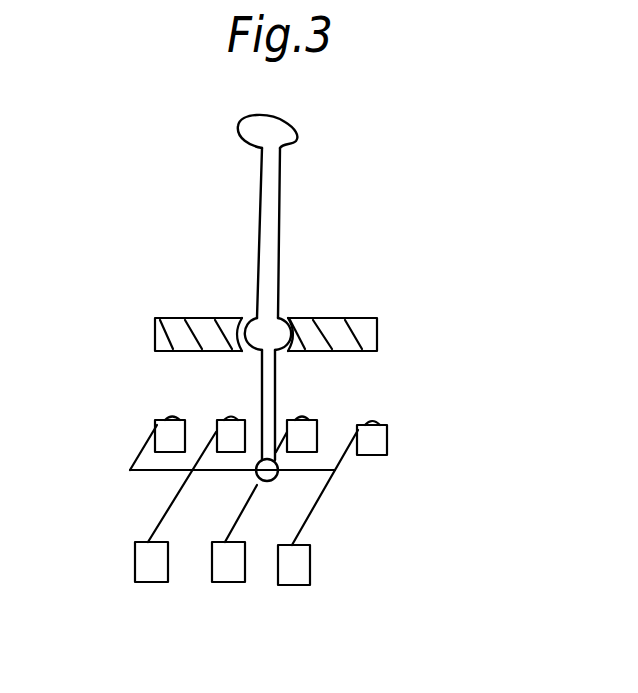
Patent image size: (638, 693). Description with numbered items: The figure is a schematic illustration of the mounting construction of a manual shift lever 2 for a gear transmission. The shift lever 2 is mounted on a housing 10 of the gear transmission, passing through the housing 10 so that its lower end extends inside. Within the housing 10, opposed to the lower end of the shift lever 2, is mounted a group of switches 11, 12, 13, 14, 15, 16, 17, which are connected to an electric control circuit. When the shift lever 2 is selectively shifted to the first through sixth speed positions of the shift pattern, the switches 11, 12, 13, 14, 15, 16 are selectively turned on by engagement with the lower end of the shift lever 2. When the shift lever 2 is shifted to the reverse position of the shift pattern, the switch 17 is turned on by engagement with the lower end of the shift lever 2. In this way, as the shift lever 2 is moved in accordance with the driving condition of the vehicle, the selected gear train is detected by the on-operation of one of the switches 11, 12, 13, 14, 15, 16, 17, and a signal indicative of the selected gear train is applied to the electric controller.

The shift lever 2 is at (283, 134).
The housing 10 is at (358, 335).
The switch 11 is at (300, 585).
The switch 12 is at (388, 425).
The switch 13 is at (234, 582).
The switch 14 is at (317, 420).
The switch 15 is at (158, 582).
The switch 16 is at (218, 425).
The switch 17 is at (158, 420).